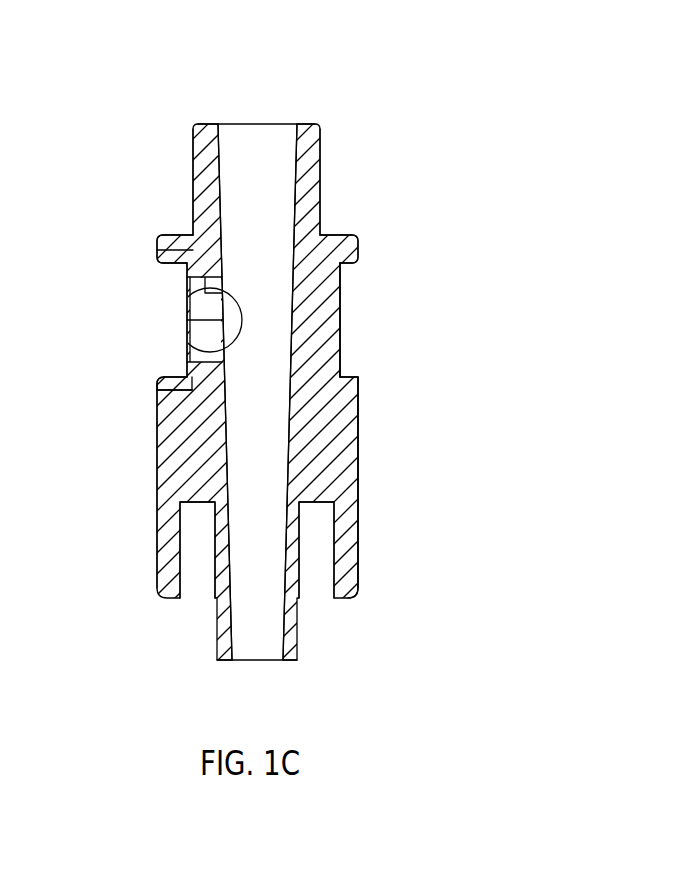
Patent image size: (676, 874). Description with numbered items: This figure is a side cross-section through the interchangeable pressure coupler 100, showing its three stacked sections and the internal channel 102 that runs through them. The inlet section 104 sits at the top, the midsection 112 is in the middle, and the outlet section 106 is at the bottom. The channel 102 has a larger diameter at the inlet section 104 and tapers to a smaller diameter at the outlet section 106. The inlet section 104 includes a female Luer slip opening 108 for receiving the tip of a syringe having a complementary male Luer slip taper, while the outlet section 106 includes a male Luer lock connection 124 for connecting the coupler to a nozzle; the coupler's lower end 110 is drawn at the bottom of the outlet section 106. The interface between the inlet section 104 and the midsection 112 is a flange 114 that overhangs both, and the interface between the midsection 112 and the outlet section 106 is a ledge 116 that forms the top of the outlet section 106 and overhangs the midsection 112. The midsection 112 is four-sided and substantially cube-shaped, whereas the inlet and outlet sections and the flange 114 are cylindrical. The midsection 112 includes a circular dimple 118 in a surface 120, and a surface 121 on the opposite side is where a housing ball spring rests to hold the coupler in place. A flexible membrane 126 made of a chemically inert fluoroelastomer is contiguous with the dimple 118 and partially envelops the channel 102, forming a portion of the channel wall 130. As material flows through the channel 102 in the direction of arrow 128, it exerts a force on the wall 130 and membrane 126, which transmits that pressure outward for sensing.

The pressure coupler 100 is at (254, 95).
The channel 102 is at (277, 175).
The inlet section 104 is at (465, 129).
The outlet section 106 is at (465, 390).
The female Luer slip opening 108 is at (229, 123).
The bottom end 110 is at (245, 661).
The midsection 112 is at (465, 260).
The flange 114 is at (341, 234).
The ledge 116 is at (343, 377).
The circular dimple 118 is at (187, 336).
The surface 120 is at (187, 365).
The surface 121 is at (343, 322).
The male Luer lock connection 124 is at (365, 502).
The flexible membrane 126 is at (187, 278).
The arrow 128 is at (380, 487).
The channel wall 130 is at (188, 321).